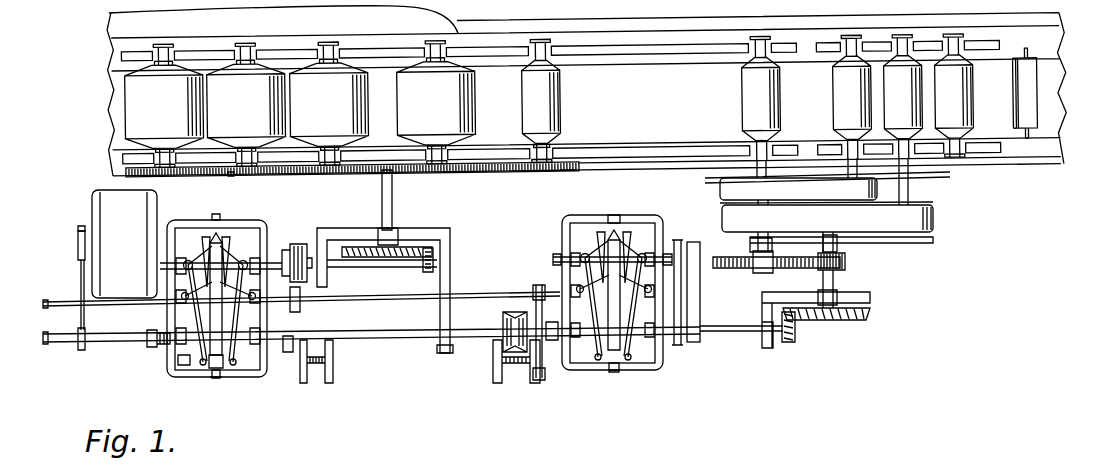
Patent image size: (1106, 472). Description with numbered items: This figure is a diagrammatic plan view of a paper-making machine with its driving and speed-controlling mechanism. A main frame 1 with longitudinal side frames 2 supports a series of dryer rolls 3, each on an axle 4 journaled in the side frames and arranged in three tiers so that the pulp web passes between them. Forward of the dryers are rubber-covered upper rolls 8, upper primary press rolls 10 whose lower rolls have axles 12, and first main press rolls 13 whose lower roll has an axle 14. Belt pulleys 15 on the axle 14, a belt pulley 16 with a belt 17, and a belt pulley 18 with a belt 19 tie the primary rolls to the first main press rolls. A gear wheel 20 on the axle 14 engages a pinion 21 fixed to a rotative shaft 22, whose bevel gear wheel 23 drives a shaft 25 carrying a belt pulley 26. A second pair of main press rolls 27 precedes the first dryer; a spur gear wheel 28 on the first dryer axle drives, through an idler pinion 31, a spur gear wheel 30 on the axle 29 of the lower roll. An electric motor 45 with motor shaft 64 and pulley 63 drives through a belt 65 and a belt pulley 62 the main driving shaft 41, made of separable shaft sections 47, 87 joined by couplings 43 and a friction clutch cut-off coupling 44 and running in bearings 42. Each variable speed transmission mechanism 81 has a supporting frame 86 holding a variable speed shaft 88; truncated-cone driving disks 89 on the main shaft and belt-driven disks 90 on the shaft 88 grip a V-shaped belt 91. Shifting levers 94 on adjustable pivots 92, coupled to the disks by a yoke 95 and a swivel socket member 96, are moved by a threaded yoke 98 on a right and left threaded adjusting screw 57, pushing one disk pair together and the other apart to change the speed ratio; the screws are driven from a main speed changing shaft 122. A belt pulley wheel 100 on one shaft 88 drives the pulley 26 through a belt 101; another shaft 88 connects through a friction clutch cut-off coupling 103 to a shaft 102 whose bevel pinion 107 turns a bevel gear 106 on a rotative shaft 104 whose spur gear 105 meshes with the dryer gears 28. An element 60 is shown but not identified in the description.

The main frame 1 is at (1003, 178).
The side frames 2 is at (145, 51).
The dryer rolls 3 is at (300, 104).
The axle 4 is at (265, 54).
The upper rolls 8 is at (1027, 97).
The upper primary press rolls 10 is at (847, 106).
The axles 12 is at (938, 175).
The first main press rolls 13 is at (753, 107).
The axle 14 is at (730, 176).
The belt pulleys 15 is at (724, 203).
The belt pulley 16 is at (915, 207).
The belt 17 is at (798, 181).
The belt pulley 18 is at (930, 233).
The belt 19 is at (915, 217).
The gear wheel 20 is at (776, 272).
The pinion 21 is at (846, 262).
The rotative shaft 22 is at (834, 285).
The bevel gear wheel 23 is at (866, 316).
The shaft 25 is at (741, 333).
The belt pulley 26 is at (677, 347).
The second main press rolls 27 is at (548, 110).
The spur gear wheel 28 is at (230, 173).
The axle 29 is at (548, 161).
The spur gear wheel 30 is at (568, 172).
The idler pinion 31 is at (502, 179).
The main driving shaft 41 is at (117, 345).
The bearings 42 is at (449, 348).
The couplings 43 is at (150, 348).
The friction clutch cut-off coupling 44 is at (507, 317).
The electric motor 45 is at (130, 215).
The shaft sections 47 is at (192, 343).
The adjusting screw 57 is at (280, 370).
The pivot 60 is at (618, 365).
The belt pulley 62 is at (82, 351).
The pulley 63 is at (78, 231).
The motor shaft 64 is at (78, 250).
The belt 65 is at (81, 280).
The variable speed power transmission mechanism 81 is at (223, 377).
The supporting frame 86 is at (247, 223).
The shaft 87 is at (377, 333).
The variable speed shaft 88 is at (255, 253).
The belt-driving disks 89 is at (205, 352).
The belt-driven disks 90 is at (218, 230).
The belt 91 is at (182, 342).
The adjustable pivots 92 is at (215, 306).
The shifting levers 94 is at (240, 317).
The yoke 95 is at (295, 317).
The swivel socket member 96 is at (188, 260).
The threaded yoke 98 is at (236, 378).
The belt pulley wheel 100 is at (692, 242).
The belt 101 is at (695, 345).
The shaft 102 is at (373, 262).
The friction clutch cut-off coupling 103 is at (297, 247).
The rotative shaft 104 is at (393, 213).
The spur gear 105 is at (382, 212).
The bevel gear 106 is at (415, 250).
The bevel pinion 107 is at (428, 267).
The main speed changing shaft 122 is at (63, 304).